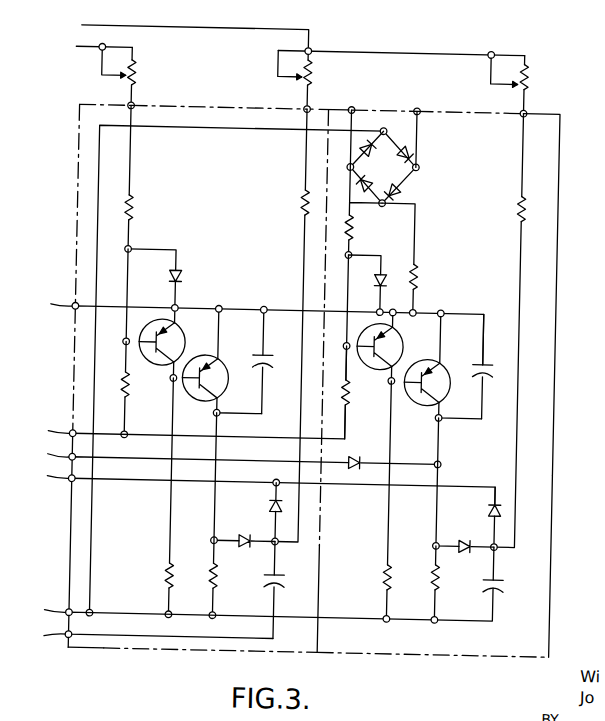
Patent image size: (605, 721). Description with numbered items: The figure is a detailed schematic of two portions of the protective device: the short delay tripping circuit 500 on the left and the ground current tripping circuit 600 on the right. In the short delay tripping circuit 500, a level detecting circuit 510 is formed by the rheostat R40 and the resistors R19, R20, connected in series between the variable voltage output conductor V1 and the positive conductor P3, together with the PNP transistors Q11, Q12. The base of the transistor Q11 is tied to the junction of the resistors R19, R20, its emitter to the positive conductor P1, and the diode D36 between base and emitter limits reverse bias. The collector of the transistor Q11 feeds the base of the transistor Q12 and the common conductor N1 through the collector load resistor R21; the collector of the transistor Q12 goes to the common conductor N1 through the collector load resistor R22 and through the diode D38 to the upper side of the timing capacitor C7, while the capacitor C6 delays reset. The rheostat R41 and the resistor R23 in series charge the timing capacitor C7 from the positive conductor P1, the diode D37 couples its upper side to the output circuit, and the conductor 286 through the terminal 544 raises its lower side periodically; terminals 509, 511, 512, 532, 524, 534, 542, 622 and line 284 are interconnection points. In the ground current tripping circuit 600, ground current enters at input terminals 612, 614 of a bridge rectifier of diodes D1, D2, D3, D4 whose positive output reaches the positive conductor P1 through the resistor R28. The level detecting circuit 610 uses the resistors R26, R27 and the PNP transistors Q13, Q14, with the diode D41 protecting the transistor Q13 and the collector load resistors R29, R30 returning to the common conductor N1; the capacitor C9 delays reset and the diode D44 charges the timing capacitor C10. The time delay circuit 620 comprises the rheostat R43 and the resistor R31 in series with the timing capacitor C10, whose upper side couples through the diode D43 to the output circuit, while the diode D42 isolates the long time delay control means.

The positive conductor P1 is at (76, 29).
The variable voltage output conductor V1 is at (74, 51).
The common conductor N1 is at (372, 620).
The positive conductor P3 is at (269, 436).
The rheostat R40 is at (147, 66).
The rheostat R41 is at (306, 79).
The rheostat R43 is at (528, 78).
The node 509 is at (130, 108).
The node 511 is at (300, 107).
The input terminal 612 is at (347, 109).
The input terminal 614 is at (412, 109).
The node 622 is at (522, 109).
The short delay tripping circuit 500 is at (209, 655).
The ground current tripping circuit 600 is at (418, 657).
The level detecting circuit 510 is at (165, 435).
The level detecting circuit 610 is at (425, 439).
The time delay circuit 620 is at (493, 299).
The line 512 is at (258, 322).
The line 532 is at (186, 420).
The line 524 is at (235, 451).
The line 534 is at (261, 482).
The line 542 is at (260, 601).
The terminal 544 is at (150, 626).
The line 284 is at (240, 450).
The conductor 286 is at (165, 639).
The resistor R19 is at (148, 197).
The resistor R20 is at (134, 387).
The collector load resistor R21 is at (164, 572).
The collector load resistor R22 is at (209, 572).
The resistor R23 is at (297, 204).
The resistor R26 is at (355, 237).
The resistor R27 is at (358, 394).
The resistor R28 is at (420, 284).
The collector load resistor R29 is at (378, 580).
The collector load resistor R30 is at (430, 571).
The resistor R31 is at (512, 205).
The capacitor C6 is at (274, 358).
The timing capacitor C7 is at (268, 583).
The capacitor C9 is at (496, 366).
The timing capacitor C10 is at (508, 582).
The diode D1 is at (405, 140).
The diode D2 is at (406, 189).
The diode D3 is at (372, 153).
The diode D4 is at (365, 185).
The diode D36 is at (184, 280).
The diode D37 is at (270, 508).
The diode D38 is at (247, 535).
The diode D41 is at (392, 268).
The diode D42 is at (364, 449).
The diode D43 is at (490, 513).
The diode D44 is at (467, 538).
The PNP transistor Q11 is at (182, 341).
The PNP transistor Q12 is at (223, 360).
The PNP transistor Q13 is at (401, 344).
The PNP transistor Q14 is at (446, 364).